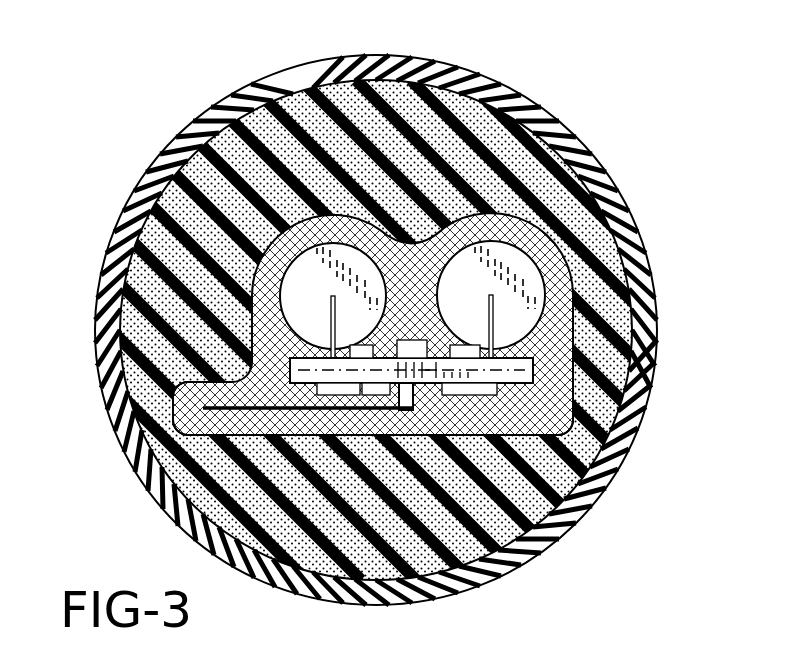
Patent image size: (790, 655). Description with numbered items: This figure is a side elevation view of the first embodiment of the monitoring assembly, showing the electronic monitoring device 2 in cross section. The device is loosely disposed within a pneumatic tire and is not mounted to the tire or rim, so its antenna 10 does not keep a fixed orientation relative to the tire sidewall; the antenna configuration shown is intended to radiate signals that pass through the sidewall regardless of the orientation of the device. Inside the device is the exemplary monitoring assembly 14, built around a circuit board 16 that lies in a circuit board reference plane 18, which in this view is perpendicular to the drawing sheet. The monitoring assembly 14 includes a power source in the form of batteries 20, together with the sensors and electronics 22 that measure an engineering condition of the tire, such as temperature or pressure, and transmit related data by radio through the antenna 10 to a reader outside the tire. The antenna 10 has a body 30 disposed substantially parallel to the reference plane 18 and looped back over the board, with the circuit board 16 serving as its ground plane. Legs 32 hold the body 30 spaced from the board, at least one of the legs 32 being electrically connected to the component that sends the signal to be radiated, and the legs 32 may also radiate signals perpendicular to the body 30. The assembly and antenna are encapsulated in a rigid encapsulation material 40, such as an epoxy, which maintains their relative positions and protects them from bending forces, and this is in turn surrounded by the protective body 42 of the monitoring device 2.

The monitoring device 2 is at (572, 82).
The antenna 10 is at (250, 410).
The monitoring assembly 14 is at (530, 342).
The circuit board 16 is at (290, 358).
The circuit board reference plane 18 is at (518, 370).
The batteries 20 is at (353, 257).
The sensors and electronics 22 is at (487, 395).
The body 30 is at (203, 407).
The legs 32 is at (413, 392).
The encapsulation material 40 is at (563, 278).
The protective body 42 is at (197, 183).